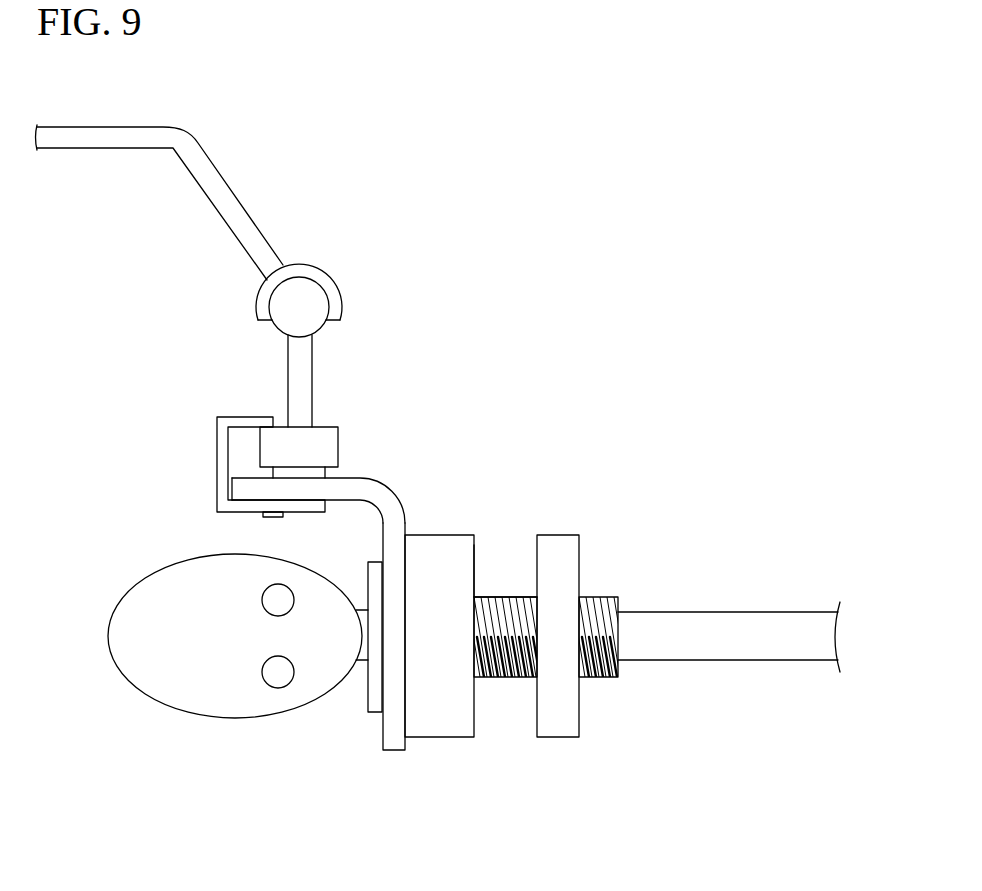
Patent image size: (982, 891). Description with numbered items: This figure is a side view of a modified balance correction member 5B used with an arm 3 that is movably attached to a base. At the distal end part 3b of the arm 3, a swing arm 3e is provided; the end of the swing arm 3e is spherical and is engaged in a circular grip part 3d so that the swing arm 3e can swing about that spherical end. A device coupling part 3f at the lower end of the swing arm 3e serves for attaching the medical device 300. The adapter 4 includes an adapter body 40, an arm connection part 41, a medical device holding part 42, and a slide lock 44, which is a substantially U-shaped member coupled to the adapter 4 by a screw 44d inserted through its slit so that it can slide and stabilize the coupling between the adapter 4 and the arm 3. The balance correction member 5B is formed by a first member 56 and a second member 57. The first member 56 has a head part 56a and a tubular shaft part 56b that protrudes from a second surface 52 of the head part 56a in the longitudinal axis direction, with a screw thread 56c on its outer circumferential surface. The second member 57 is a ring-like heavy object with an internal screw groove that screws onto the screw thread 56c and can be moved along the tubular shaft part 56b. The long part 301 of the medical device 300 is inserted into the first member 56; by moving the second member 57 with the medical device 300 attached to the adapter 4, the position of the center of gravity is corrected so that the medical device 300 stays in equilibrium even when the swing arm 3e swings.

The arm 3 is at (143, 131).
The distal end part 3b is at (289, 257).
The grip part 3d is at (333, 280).
The swing arm 3e is at (306, 347).
The device coupling part 3f is at (323, 437).
The adapter 4 is at (327, 622).
The adapter body 40 is at (390, 751).
The arm connection part 41 is at (328, 476).
The medical device holding part 42 is at (373, 702).
The slide lock 44 is at (217, 490).
The screw 44d is at (273, 517).
The balance correction member 5B is at (435, 760).
The second surface 52 is at (475, 543).
The first member 56 is at (558, 652).
The head part 56a is at (452, 535).
The tubular shaft part 56b is at (603, 594).
The screw thread 56c is at (502, 595).
The second member 57 is at (560, 535).
The medical device 300 is at (144, 706).
The long part 301 is at (786, 652).